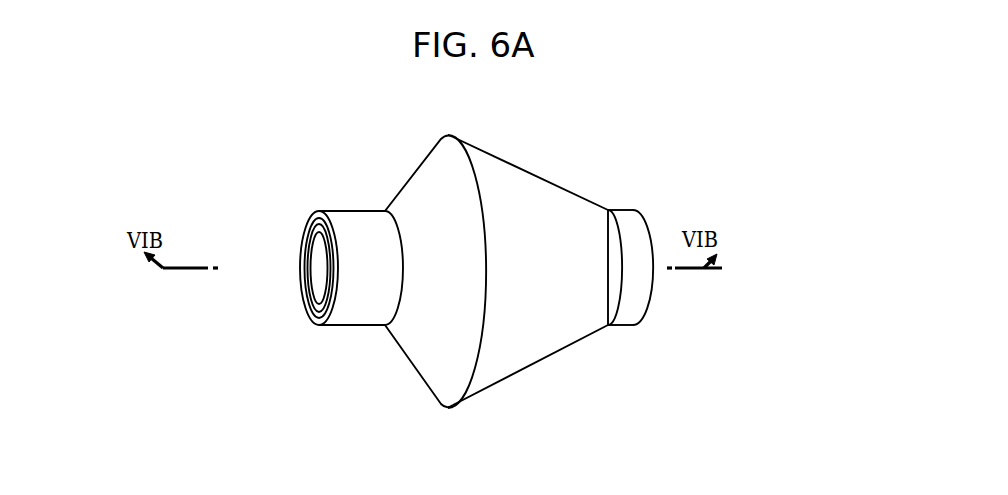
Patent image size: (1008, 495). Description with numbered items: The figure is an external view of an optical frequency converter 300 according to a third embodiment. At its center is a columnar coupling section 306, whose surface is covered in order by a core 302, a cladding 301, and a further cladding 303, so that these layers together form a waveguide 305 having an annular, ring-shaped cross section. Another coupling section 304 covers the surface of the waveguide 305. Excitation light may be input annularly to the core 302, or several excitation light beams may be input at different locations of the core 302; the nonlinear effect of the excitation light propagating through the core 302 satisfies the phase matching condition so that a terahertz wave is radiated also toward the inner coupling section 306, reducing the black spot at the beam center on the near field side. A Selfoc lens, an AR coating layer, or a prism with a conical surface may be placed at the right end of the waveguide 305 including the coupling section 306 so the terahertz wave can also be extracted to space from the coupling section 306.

The optical frequency converter 300 is at (796, 409).
The cladding 301 is at (313, 223).
The core 302 is at (318, 308).
The cladding 303 is at (320, 212).
The coupling section 304 is at (512, 176).
The waveguide 305 is at (750, 332).
The columnar coupling section 306 is at (313, 264).